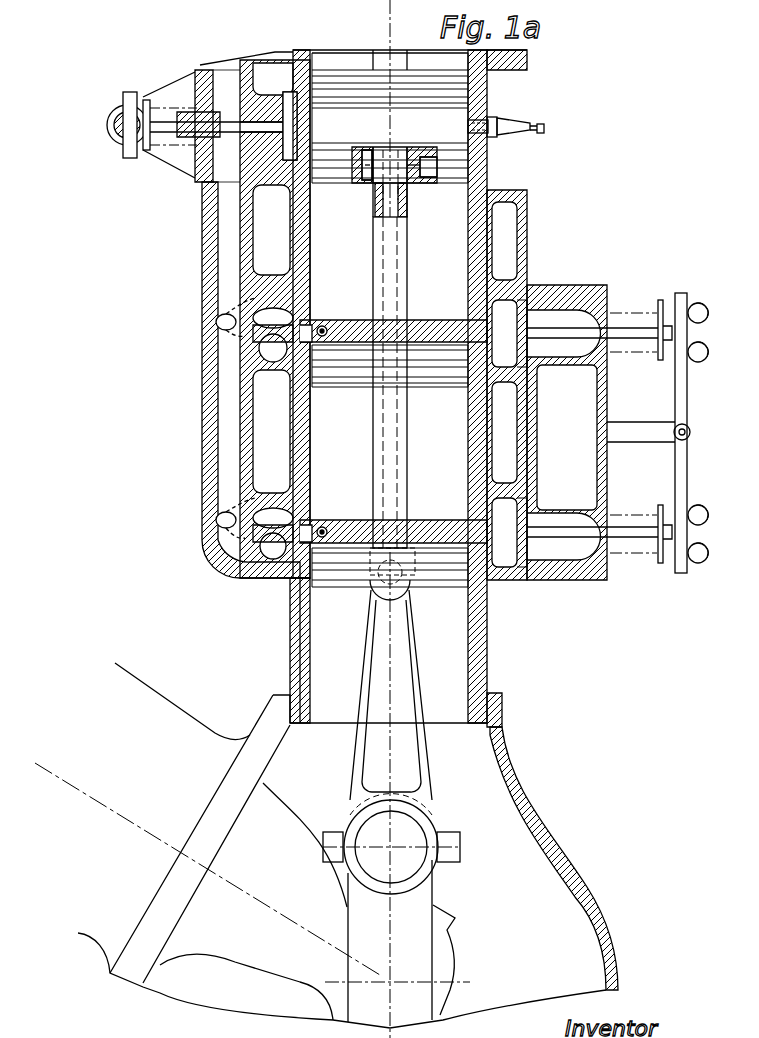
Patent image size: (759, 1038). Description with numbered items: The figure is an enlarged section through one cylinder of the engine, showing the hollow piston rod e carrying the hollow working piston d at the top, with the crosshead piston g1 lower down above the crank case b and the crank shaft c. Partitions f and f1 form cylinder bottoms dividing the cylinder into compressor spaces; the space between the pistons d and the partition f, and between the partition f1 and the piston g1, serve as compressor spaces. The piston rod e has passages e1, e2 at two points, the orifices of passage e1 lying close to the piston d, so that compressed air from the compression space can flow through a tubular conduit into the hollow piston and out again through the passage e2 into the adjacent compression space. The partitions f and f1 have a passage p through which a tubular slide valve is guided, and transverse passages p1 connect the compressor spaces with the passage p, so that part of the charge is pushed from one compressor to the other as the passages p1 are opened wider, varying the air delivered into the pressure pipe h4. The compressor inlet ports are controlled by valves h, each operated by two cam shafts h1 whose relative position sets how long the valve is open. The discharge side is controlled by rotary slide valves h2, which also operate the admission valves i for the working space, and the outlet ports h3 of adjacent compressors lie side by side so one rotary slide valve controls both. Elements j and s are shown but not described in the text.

The admission valve i is at (112, 140).
The working piston d is at (452, 98).
The bolt j is at (532, 128).
The passage e1 is at (372, 190).
The passage e2 is at (415, 180).
The piston rod e is at (408, 262).
The valve h is at (530, 330).
The cam shaft h1 is at (702, 350).
The rotary slide valve h2 is at (258, 332).
The outlet port h3 is at (222, 318).
The pressure pipe h4 is at (228, 425).
The passage p is at (320, 325).
The passage p1 is at (328, 322).
The partition f is at (432, 320).
The partition f1 is at (435, 520).
The middle piston s is at (440, 388).
The crosshead piston g1 is at (445, 590).
The crank case b is at (580, 845).
The crank shaft c is at (420, 902).